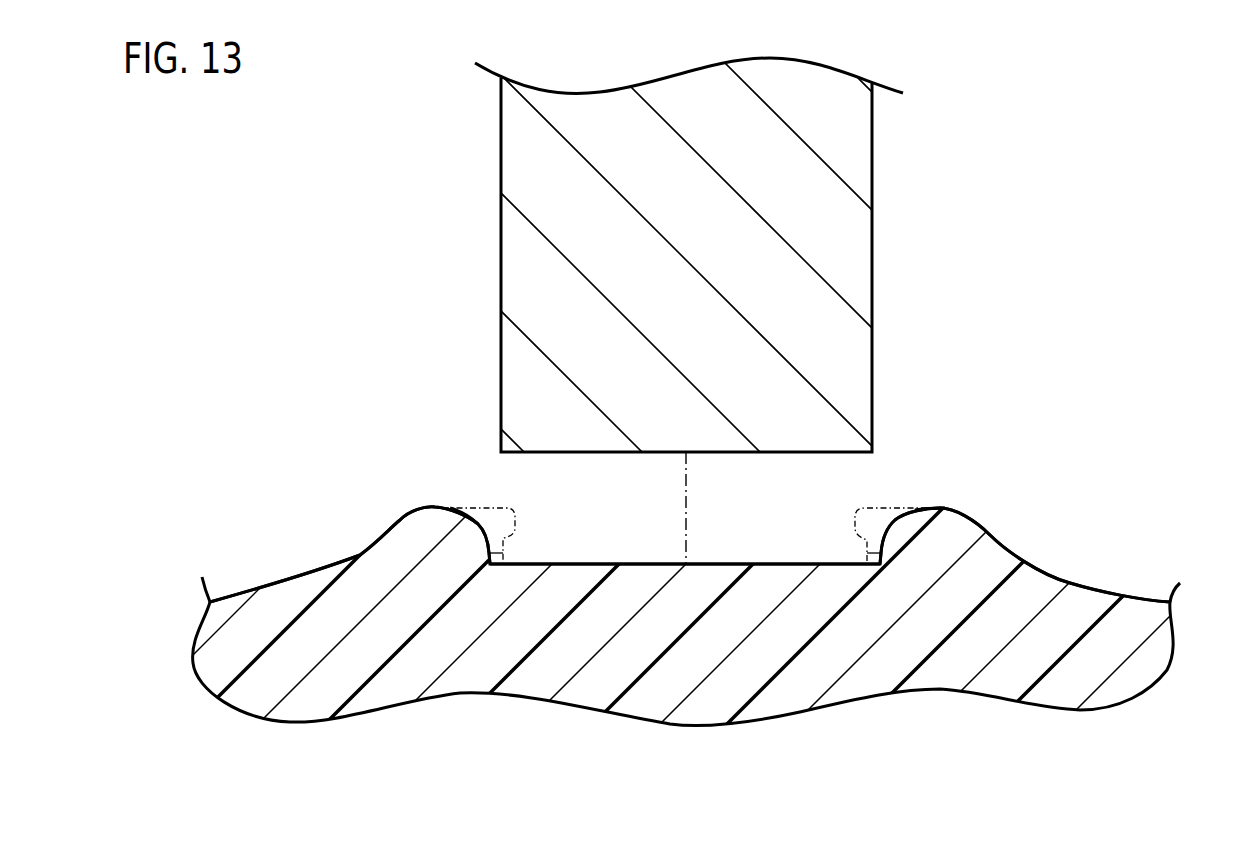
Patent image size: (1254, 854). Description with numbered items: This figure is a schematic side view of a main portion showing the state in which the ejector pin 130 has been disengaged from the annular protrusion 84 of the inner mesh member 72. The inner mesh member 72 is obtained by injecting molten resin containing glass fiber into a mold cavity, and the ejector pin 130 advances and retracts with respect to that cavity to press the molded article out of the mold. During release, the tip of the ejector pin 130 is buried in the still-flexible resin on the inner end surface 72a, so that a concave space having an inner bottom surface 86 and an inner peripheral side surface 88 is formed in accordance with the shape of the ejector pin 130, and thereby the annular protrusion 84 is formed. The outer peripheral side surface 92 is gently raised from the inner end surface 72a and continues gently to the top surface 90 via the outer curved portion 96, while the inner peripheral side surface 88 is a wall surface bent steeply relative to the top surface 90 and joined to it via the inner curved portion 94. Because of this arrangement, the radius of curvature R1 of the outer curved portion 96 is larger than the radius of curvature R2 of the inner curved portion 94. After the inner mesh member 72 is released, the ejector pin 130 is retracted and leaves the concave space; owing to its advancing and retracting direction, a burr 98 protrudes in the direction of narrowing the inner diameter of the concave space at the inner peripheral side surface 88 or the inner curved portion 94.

The ejector pin 130 is at (855, 228).
The inner mesh member 72 is at (1148, 675).
The inner end surface 72a is at (1025, 580).
The annular protrusion 84 is at (947, 500).
The inner bottom surface 86 is at (773, 563).
The inner peripheral side surface 88 is at (503, 552).
The top surface 90 is at (928, 507).
The outer peripheral side surface 92 is at (330, 568).
The inner curved portion 94 is at (466, 516).
The outer curved portion 96 is at (400, 521).
The burr 98 is at (870, 508).
The radius of curvature of the outer curved portion R1 is at (397, 527).
The radius of curvature of the inner curved portion R2 is at (477, 533).